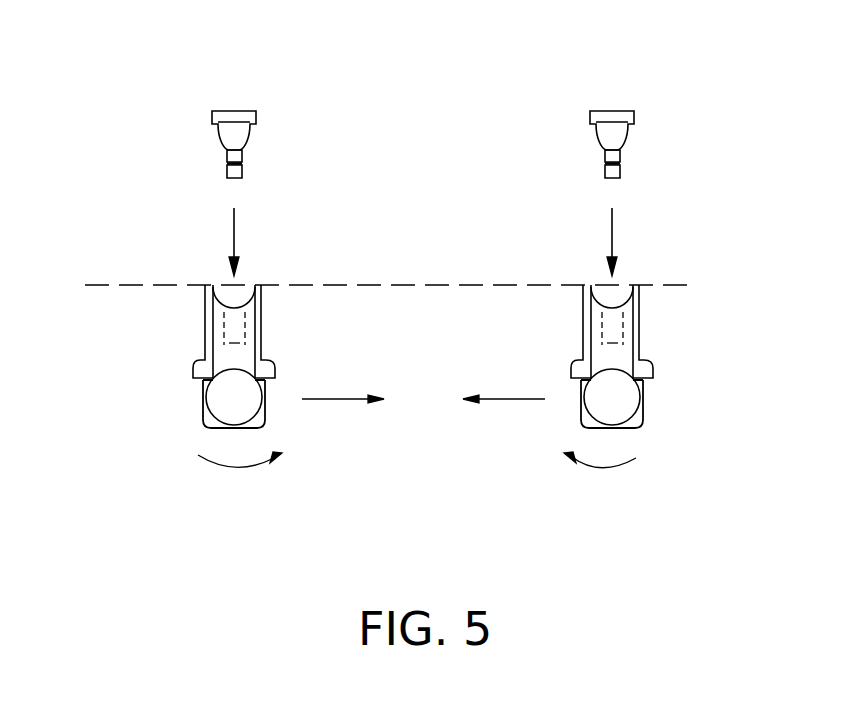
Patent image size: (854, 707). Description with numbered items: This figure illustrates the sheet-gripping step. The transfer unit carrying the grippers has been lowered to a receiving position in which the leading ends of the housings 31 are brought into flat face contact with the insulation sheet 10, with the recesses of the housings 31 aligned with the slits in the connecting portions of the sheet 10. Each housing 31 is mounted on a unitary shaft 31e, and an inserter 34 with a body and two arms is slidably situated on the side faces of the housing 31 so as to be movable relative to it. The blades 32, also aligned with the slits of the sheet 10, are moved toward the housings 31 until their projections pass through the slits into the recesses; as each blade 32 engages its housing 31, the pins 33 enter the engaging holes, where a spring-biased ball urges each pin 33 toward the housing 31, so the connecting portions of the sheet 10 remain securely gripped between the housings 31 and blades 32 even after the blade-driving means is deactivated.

The sheet 10 is at (386, 284).
The housing 31 is at (218, 330).
The unitary shaft 31e is at (234, 405).
The blade 32 is at (232, 135).
The pin 33 is at (228, 173).
The inserter 34 is at (197, 373).